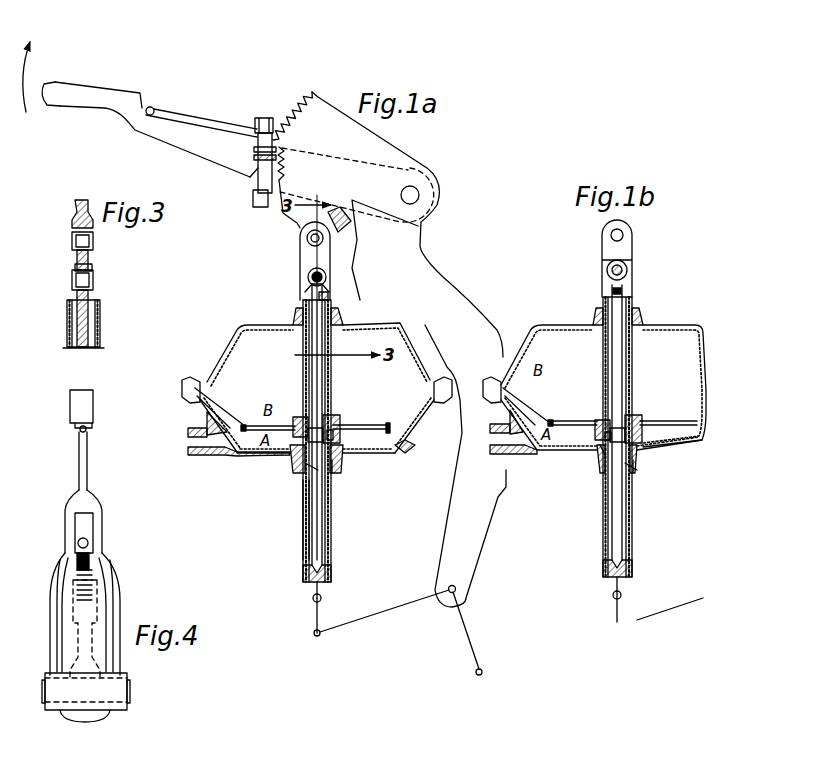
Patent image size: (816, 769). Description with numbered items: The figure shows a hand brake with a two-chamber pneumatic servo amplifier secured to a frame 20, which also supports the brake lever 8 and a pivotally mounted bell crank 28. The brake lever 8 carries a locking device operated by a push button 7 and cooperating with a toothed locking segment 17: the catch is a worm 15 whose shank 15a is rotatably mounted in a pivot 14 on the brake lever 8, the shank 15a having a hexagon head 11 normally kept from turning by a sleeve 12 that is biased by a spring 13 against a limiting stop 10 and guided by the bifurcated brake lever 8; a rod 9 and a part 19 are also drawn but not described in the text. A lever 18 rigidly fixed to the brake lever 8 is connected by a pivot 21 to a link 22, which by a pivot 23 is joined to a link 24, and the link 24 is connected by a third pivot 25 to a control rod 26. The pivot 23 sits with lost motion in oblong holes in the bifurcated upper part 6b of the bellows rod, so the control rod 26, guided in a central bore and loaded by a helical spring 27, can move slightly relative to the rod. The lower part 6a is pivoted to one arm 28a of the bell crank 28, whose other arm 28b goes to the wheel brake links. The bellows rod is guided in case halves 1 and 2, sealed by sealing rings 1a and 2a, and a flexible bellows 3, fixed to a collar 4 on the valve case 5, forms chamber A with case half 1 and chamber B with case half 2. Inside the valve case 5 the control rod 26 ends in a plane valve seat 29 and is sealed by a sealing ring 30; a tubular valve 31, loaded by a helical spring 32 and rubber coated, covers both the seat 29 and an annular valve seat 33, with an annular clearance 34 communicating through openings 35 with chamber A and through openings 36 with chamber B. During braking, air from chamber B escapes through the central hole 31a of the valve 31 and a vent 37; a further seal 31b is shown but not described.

In FIG. 1A, the case half 1 is at (240, 456).
In FIG. 1A, the sealing ring 1a is at (300, 458).
In FIG. 1A, the case half 2 is at (206, 376).
In FIG. 1A, the sealing ring 2a is at (300, 336).
In FIG. 1A, the bellows 3 is at (236, 409).
In FIG. 1A, the collar 4 is at (254, 424).
In FIG. 1A, the valve case 5 is at (361, 420).
In FIG. 1A, the lower part of bellows rod 6a is at (303, 521).
In FIG. 1A, the upper part of bellows rod 6b is at (331, 347).
In FIG. 3, the upper part of bellows rod 6b is at (100, 312).
In FIG. 1A, the push button 7 is at (48, 76).
In FIG. 1A, the brake lever 8 is at (127, 96).
In FIG. 4, the brake lever 8 is at (91, 402).
In FIG. 1A, the connecting rod 9 is at (180, 112).
In FIG. 4, the connecting rod 9 is at (88, 446).
In FIG. 1A, the limiting stop 10 is at (256, 122).
In FIG. 1A, the hexagon head 11 is at (262, 117).
In FIG. 4, the hexagon head 11 is at (89, 541).
In FIG. 1A, the sleeve 12 is at (276, 126).
In FIG. 4, the sleeve 12 is at (88, 536).
In FIG. 1A, the spring 13 is at (258, 158).
In FIG. 1A, the pivot 14 is at (257, 166).
In FIG. 4, the pivot 14 is at (104, 553).
In FIG. 1A, the worm 15 is at (260, 207).
In FIG. 1A, the shank 15a is at (253, 150).
In FIG. 1A, the locking segment 17 is at (309, 92).
In FIG. 4, the locking segment 17 is at (93, 608).
In FIG. 1A, the lever 18 is at (364, 197).
In FIG. 3, the lever 18 is at (93, 226).
In FIG. 1A, the pivot 19 is at (401, 197).
In FIG. 4, the pivot 19 is at (125, 682).
In FIG. 1A, the frame 20 is at (430, 176).
In FIG. 1A, the pivot 21 is at (306, 238).
In FIG. 3, the pivot 21 is at (94, 244).
In FIG. 1A, the link 22 is at (300, 254).
In FIG. 1A, the pivot 23 is at (307, 277).
In FIG. 3, the pivot 23 is at (94, 285).
In FIG. 1A, the link 24 is at (305, 286).
In FIG. 1A, the pivot 25 is at (327, 300).
In FIG. 1A, the control rod 26 is at (311, 367).
In FIG. 3, the control rod 26 is at (90, 331).
In FIG. 1A, the helical spring 27 is at (302, 391).
In FIG. 1A, the bell crank 28 is at (397, 628).
In FIG. 3, the bell crank 28 is at (93, 268).
In FIG. 1A, the arm of bell crank 28a is at (343, 629).
In FIG. 1A, the arm of bell crank 28b is at (462, 626).
In FIG. 1A, the plane valve seat 29 is at (312, 476).
In FIG. 1B, the plane valve seat 29 is at (634, 428).
In FIG. 1A, the sealing ring 30 is at (335, 414).
In FIG. 1A, the tubular valve 31 is at (333, 474).
In FIG. 1B, the tubular valve 31 is at (640, 452).
In FIG. 1B, the central hole 31a is at (637, 463).
In FIG. 1A, the seal 31b is at (305, 470).
In FIG. 1A, the helical spring 32 is at (305, 541).
In FIG. 1A, the annular valve seat 33 is at (338, 428).
In FIG. 1B, the annular valve seat 33 is at (602, 441).
In FIG. 1A, the annular clearance 34 is at (335, 420).
In FIG. 1B, the annular clearance 34 is at (635, 416).
In FIG. 1B, the openings 35 is at (602, 437).
In FIG. 1B, the openings 36 is at (600, 414).
In FIG. 1A, the vent 37 is at (332, 580).